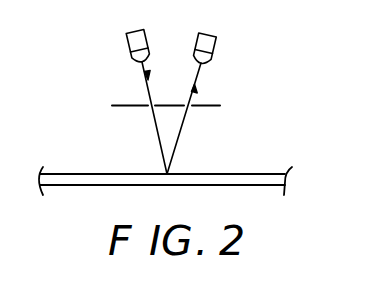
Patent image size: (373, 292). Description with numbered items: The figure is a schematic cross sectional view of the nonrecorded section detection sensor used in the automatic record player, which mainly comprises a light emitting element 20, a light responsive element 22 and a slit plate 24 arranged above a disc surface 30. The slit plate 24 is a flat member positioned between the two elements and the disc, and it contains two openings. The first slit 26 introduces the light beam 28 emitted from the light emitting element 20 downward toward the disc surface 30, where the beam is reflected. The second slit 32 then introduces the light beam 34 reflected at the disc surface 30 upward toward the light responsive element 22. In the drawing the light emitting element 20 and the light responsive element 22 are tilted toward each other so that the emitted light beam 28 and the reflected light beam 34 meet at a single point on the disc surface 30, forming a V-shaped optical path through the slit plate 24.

The light emitting element 20 is at (129, 38).
The light responsive element 22 is at (209, 47).
The slit plate 24 is at (203, 105).
The first slit 26 is at (150, 109).
The light beam 28 is at (143, 68).
The disc surface 30 is at (232, 174).
The second slit 32 is at (193, 107).
The light beam 34 is at (175, 150).